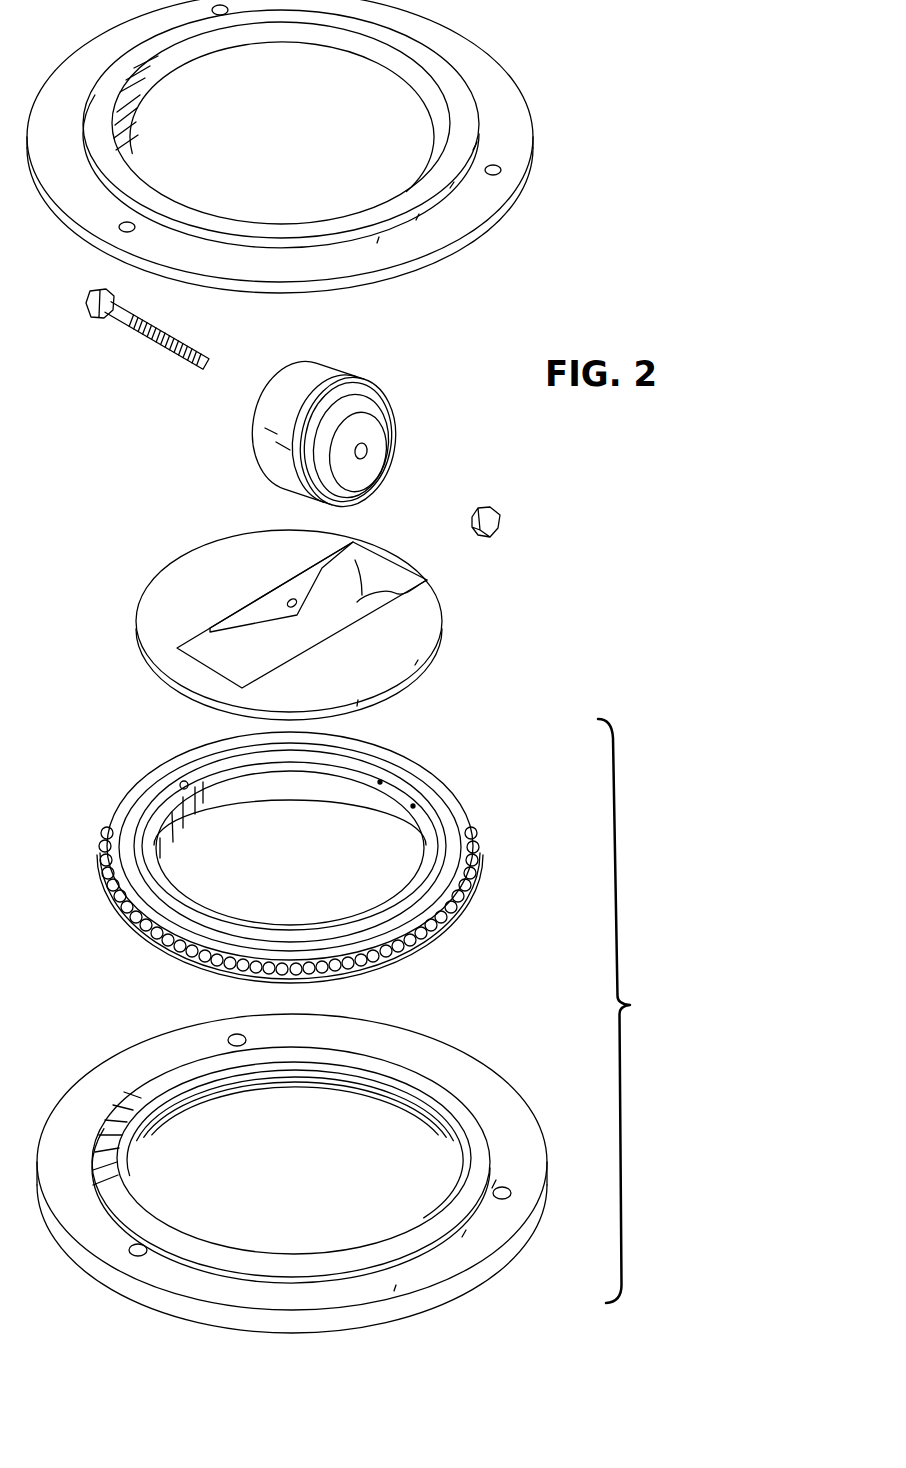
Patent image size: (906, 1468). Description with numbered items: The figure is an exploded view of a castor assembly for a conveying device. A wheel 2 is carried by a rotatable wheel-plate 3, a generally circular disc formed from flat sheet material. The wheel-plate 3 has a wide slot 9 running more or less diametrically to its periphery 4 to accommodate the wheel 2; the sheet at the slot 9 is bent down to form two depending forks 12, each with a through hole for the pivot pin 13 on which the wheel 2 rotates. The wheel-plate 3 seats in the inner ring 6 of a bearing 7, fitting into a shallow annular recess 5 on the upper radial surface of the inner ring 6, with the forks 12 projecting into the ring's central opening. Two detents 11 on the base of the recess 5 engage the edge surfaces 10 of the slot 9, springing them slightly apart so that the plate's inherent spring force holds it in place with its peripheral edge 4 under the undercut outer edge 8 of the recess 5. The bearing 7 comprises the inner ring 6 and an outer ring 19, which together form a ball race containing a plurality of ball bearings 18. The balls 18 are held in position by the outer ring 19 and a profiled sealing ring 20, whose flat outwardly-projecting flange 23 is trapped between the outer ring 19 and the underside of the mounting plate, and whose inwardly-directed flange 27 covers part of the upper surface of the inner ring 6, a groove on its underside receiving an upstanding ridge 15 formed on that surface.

The wheel 2 is at (338, 380).
The wheel-plate 3 is at (292, 598).
The periphery 4 is at (445, 637).
The annular recess 5 is at (148, 862).
The inner ring 6 is at (447, 867).
The bearing 7 is at (341, 1026).
The outer edge 8 is at (193, 783).
The slot 9 is at (372, 572).
The edge surfaces 10 is at (356, 597).
The detents 11 is at (413, 806).
The forks 12 is at (210, 631).
The pivot pin 13 is at (157, 343).
The ridge 15 is at (463, 807).
The ball bearings 18 is at (440, 958).
The outer ring 19 is at (75, 1112).
The sealing ring 20 is at (297, 146).
The outwardly-projecting flange 23 is at (465, 217).
The inwardly-directed flange 27 is at (135, 107).